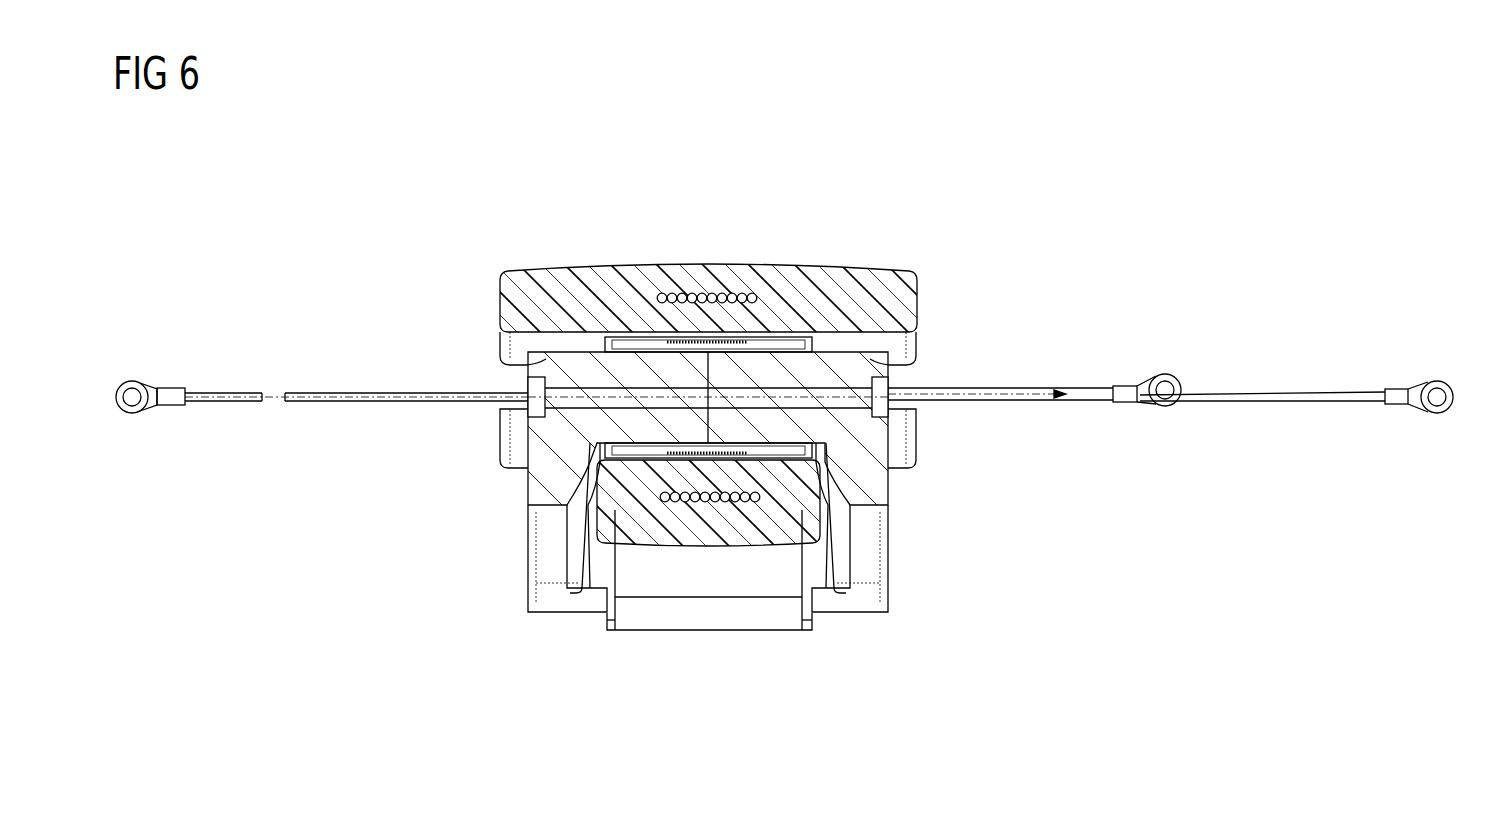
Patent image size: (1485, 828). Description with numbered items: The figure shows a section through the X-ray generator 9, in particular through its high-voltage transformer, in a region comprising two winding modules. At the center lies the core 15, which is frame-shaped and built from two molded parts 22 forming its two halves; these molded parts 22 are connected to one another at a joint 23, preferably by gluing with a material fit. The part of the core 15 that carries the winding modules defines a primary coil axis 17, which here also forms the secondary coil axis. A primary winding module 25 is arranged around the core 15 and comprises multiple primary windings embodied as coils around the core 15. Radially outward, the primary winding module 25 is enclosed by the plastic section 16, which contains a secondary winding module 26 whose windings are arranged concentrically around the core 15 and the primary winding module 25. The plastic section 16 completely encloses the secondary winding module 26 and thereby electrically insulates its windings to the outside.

The X-ray generator 9 is at (916, 209).
The core 15 is at (530, 440).
The plastic section 16 is at (640, 278).
The primary coil axis 17 is at (1000, 387).
The molded parts 22 is at (530, 375).
The joint 23 is at (712, 421).
The primary winding module 25 is at (680, 452).
The secondary winding module 26 is at (708, 294).